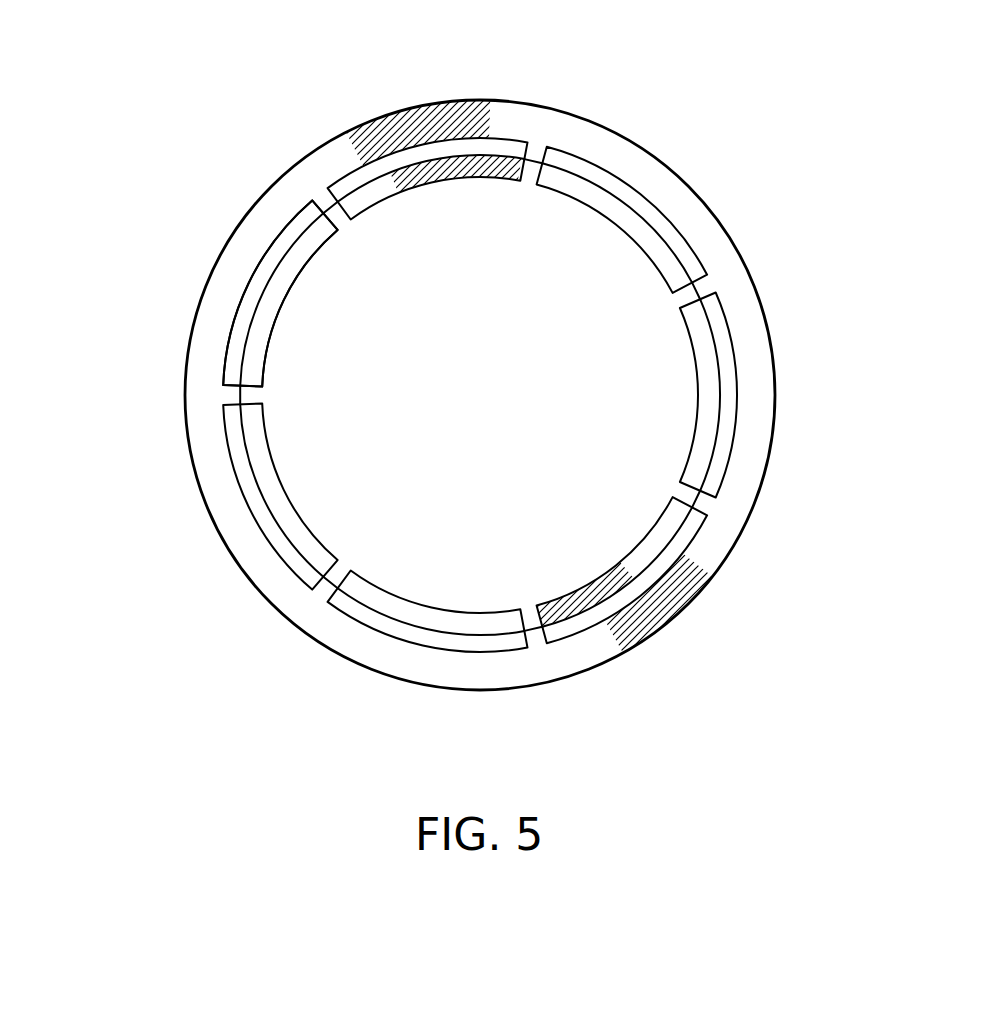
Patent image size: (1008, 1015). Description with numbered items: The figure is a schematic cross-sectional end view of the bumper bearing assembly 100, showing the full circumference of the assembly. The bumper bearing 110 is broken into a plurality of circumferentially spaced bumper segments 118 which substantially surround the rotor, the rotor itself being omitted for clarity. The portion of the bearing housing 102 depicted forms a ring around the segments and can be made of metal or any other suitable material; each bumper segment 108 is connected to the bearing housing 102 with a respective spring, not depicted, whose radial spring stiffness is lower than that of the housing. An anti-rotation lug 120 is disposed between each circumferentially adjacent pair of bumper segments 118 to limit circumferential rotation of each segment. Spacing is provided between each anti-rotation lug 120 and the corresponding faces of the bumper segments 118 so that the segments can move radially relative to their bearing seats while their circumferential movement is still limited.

The rotor assembly 100 is at (150, 81).
The bearing housing 102 is at (310, 167).
The arcuate segment 108 is at (423, 140).
The bumper bearing 110 is at (266, 369).
The bumper segment 118 is at (283, 302).
The anti-rotation lug 120 is at (532, 160).